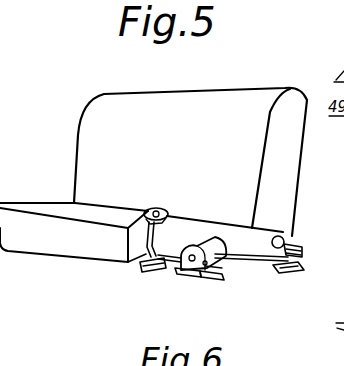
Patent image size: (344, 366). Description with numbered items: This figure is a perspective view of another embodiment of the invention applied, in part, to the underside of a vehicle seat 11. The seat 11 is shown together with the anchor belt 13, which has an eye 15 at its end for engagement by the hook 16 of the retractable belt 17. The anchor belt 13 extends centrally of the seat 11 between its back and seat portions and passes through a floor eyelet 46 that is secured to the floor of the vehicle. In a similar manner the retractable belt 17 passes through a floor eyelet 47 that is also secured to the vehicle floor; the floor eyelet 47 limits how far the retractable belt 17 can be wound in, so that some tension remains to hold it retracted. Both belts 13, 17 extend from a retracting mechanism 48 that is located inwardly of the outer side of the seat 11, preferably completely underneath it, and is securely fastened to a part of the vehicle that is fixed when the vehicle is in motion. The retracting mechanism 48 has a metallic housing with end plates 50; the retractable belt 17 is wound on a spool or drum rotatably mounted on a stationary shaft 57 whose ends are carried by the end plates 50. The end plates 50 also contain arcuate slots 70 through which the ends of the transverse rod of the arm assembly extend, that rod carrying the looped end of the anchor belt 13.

The seat 11 is at (96, 93).
The anchor belt 13 is at (146, 239).
The eye 15 is at (149, 208).
The hook 16 is at (293, 239).
The retractable belt 17 is at (247, 257).
The floor eyelet 46 is at (142, 268).
The floor eyelet 47 is at (304, 265).
The retracting mechanism 48 is at (221, 234).
The end plates 50 is at (181, 265).
The stationary shaft 57 is at (193, 271).
The arcuate slots 70 is at (212, 273).